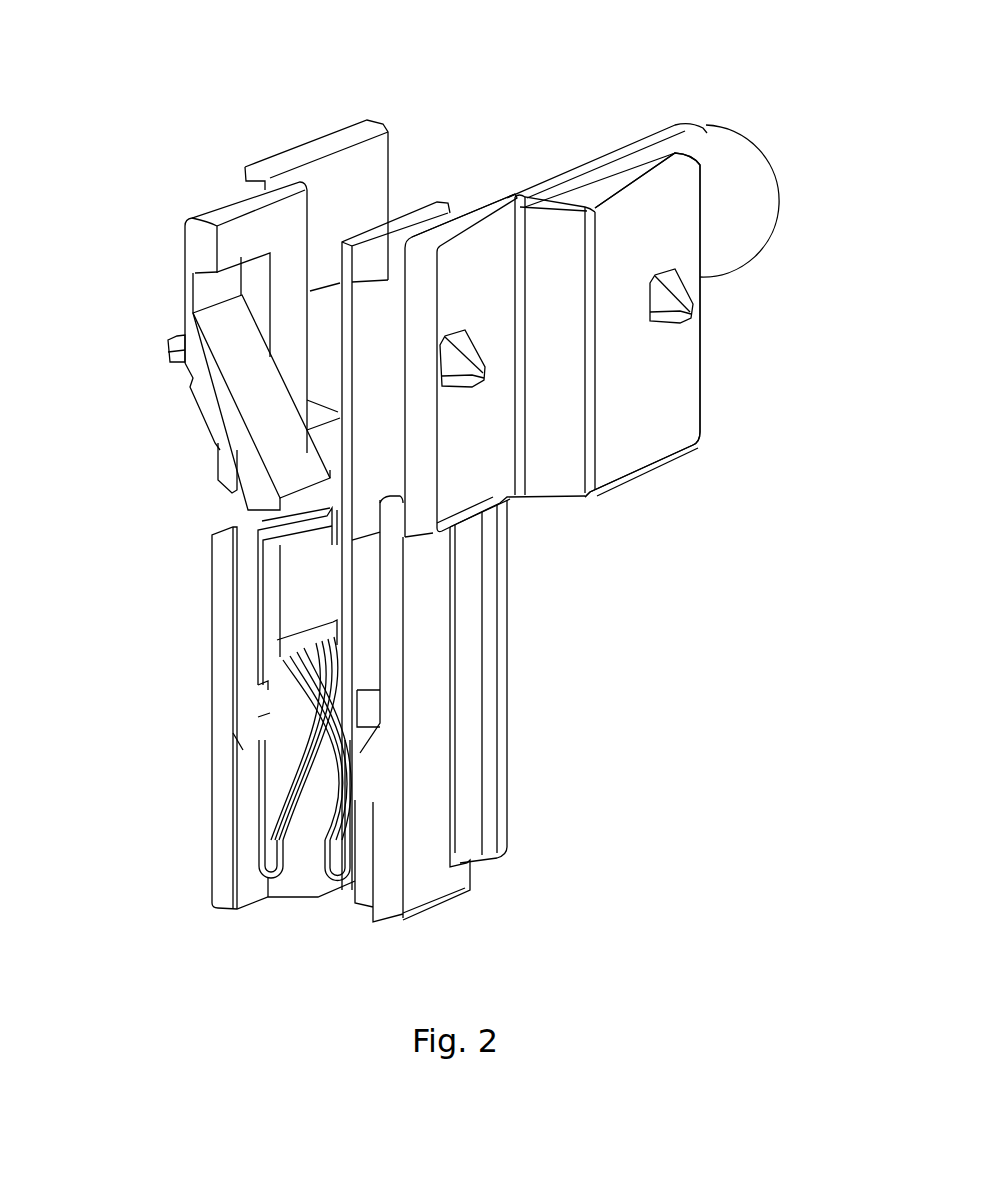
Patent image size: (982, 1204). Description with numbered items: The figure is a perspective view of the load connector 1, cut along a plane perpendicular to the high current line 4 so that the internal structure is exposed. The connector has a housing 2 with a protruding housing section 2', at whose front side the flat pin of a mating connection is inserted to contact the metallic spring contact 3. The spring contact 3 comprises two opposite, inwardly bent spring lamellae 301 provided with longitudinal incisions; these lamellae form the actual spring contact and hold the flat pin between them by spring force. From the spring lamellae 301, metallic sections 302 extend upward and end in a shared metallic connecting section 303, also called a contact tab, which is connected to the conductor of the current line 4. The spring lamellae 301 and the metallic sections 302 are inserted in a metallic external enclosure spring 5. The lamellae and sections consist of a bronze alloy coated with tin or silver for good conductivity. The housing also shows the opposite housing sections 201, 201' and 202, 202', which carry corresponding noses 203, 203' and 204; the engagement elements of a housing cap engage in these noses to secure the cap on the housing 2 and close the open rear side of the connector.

The load connector 1 is at (565, 88).
The housing 2 is at (567, 351).
The protruding housing section 2' is at (391, 713).
The spring contact 3 is at (292, 603).
The high current line 4 is at (615, 143).
The external enclosure spring 5 is at (257, 752).
The housing section 201 is at (495, 319).
The housing section 201' is at (203, 346).
The housing section 202 is at (703, 325).
The housing section 202' is at (316, 175).
The nose 203 is at (465, 402).
The nose 203' is at (116, 330).
The nose 204 is at (663, 330).
The spring lamellae 301 is at (323, 867).
The metallic sections 302 is at (300, 548).
The connecting section 303 is at (407, 212).